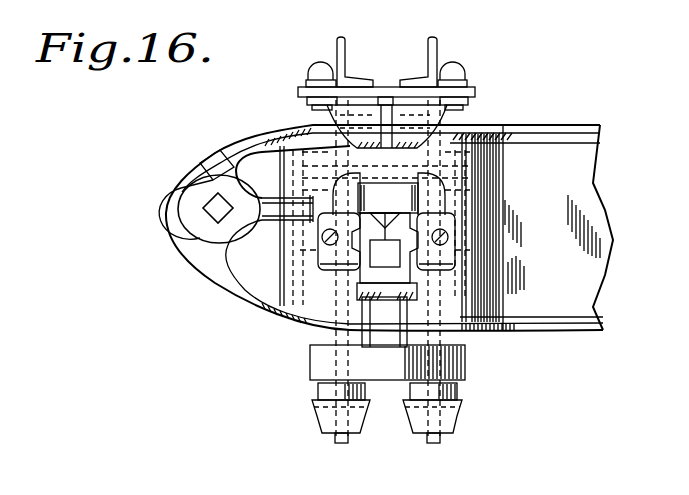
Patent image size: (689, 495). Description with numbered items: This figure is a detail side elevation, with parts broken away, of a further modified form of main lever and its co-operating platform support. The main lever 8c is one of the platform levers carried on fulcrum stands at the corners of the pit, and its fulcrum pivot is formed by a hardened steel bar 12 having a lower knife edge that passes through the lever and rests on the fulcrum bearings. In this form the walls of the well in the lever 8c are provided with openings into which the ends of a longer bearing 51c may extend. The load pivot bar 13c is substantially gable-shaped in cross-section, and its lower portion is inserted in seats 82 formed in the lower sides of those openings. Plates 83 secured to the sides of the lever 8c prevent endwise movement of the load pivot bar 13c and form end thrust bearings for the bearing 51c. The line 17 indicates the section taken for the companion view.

The main lever 8c is at (547, 150).
The hardened steel bar 12 is at (192, 211).
The load pivot bar 13c is at (380, 258).
The section line 17 is at (262, 190).
The bearing 51c is at (345, 238).
The seat 82 is at (458, 282).
The plate 83 is at (443, 229).